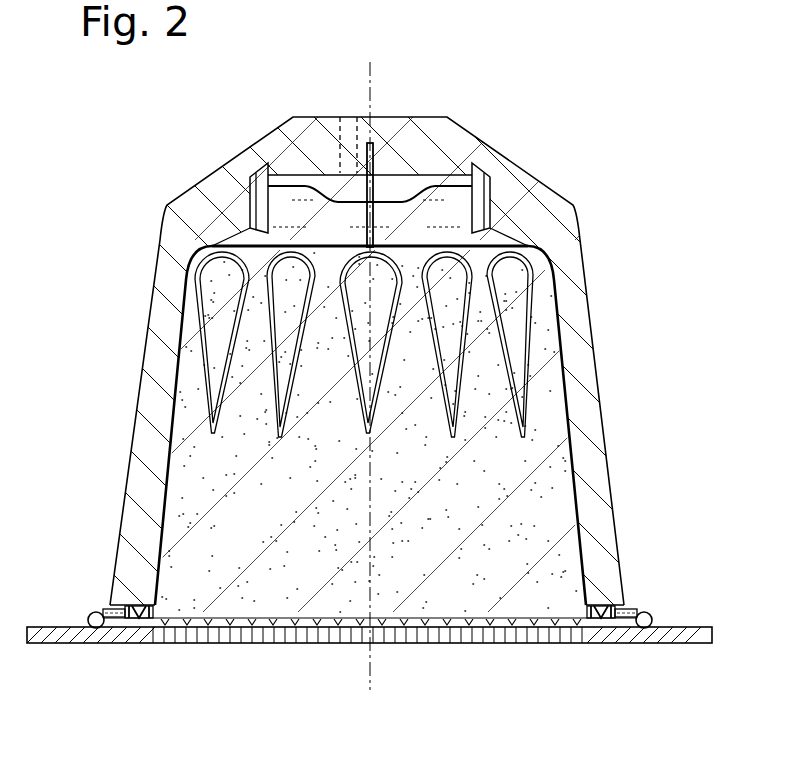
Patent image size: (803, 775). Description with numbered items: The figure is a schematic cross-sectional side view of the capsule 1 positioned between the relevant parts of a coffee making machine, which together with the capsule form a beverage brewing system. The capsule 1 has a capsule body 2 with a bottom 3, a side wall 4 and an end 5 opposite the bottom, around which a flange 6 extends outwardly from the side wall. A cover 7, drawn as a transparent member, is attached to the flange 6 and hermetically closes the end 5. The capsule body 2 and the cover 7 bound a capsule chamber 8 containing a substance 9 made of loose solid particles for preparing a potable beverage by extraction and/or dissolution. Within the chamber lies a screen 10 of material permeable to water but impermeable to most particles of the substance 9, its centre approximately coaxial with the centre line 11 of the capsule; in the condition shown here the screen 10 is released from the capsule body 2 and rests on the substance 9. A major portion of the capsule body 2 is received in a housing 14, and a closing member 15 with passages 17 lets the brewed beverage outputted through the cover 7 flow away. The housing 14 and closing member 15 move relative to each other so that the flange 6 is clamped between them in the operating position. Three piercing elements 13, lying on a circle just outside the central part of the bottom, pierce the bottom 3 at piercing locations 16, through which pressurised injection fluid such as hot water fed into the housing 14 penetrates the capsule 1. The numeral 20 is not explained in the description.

The capsule 1 is at (506, 198).
The capsule body 2 is at (401, 336).
The bottom 3 is at (430, 188).
The side wall 4 is at (570, 397).
The end 5 is at (553, 617).
The flange 6 is at (632, 607).
The cover 7 is at (522, 617).
The capsule chamber 8 is at (197, 487).
The substance 9 is at (392, 246).
The screen 10 is at (250, 222).
The centre line 11 is at (367, 70).
The piercing elements 13 is at (260, 163).
The housing 14 is at (582, 305).
The closing member 15 is at (630, 640).
The piercing locations 16 is at (248, 222).
The passages 17 is at (273, 633).
The bottom edge 20 is at (203, 246).